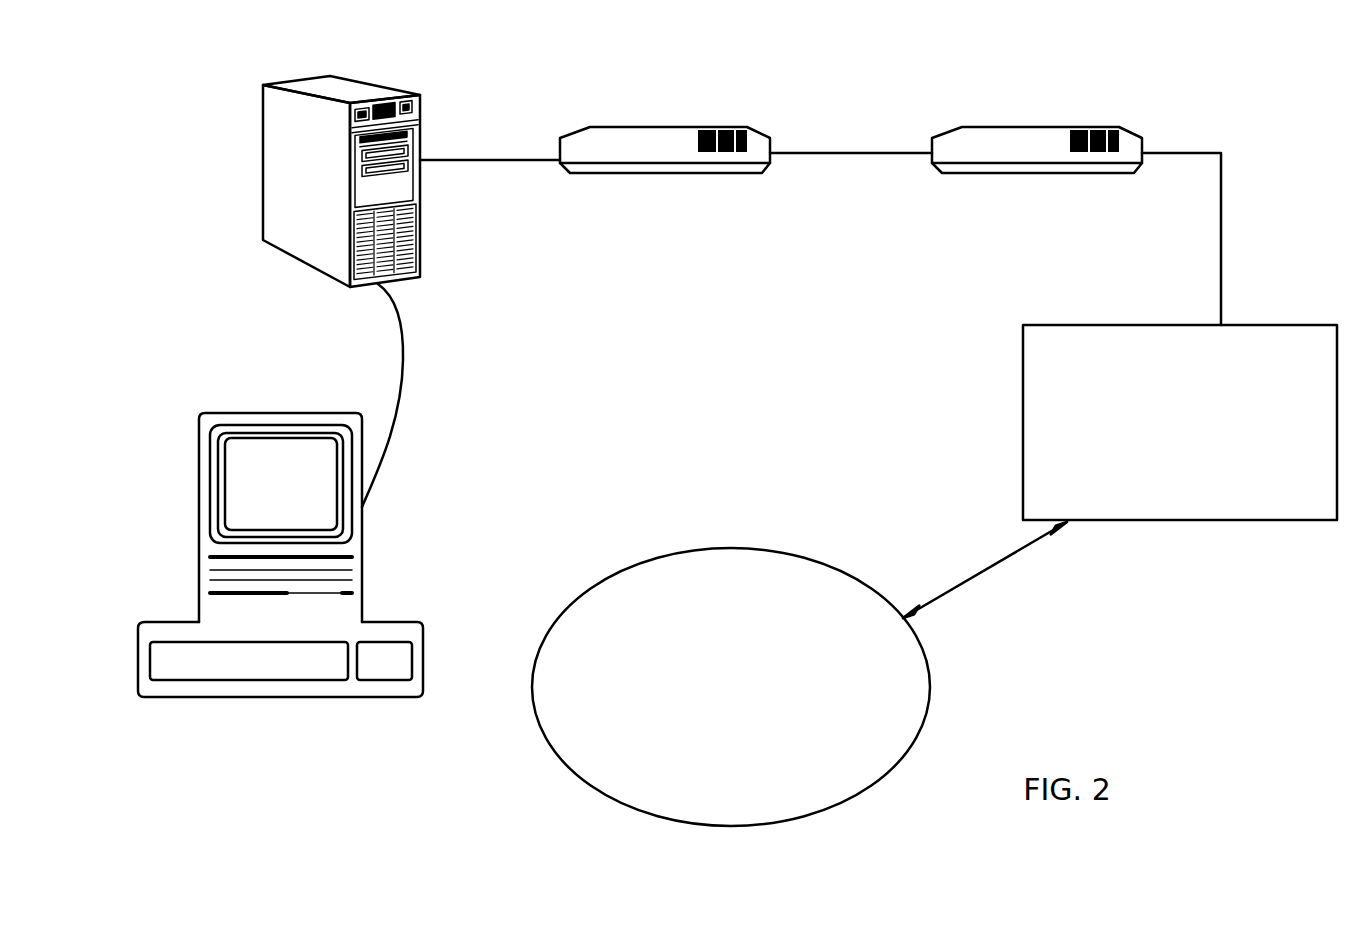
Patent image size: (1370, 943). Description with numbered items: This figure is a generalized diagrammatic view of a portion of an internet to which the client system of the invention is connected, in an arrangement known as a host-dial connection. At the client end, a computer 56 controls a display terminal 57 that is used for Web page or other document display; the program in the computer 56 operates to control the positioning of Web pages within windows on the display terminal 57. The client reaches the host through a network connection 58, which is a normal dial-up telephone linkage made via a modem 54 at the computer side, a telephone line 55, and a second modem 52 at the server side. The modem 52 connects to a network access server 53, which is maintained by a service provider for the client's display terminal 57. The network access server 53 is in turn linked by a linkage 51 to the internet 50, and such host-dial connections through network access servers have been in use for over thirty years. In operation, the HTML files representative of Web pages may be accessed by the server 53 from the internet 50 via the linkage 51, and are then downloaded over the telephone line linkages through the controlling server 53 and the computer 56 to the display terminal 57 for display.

The internet 50 is at (818, 783).
The linkage 51 is at (983, 575).
The modem 52 is at (998, 128).
The network access server 53 is at (1283, 402).
The modem 54 is at (637, 128).
The telephone line 55 is at (848, 153).
The computer 56 is at (310, 133).
The display terminal 57 is at (207, 480).
The connection 58 is at (463, 160).